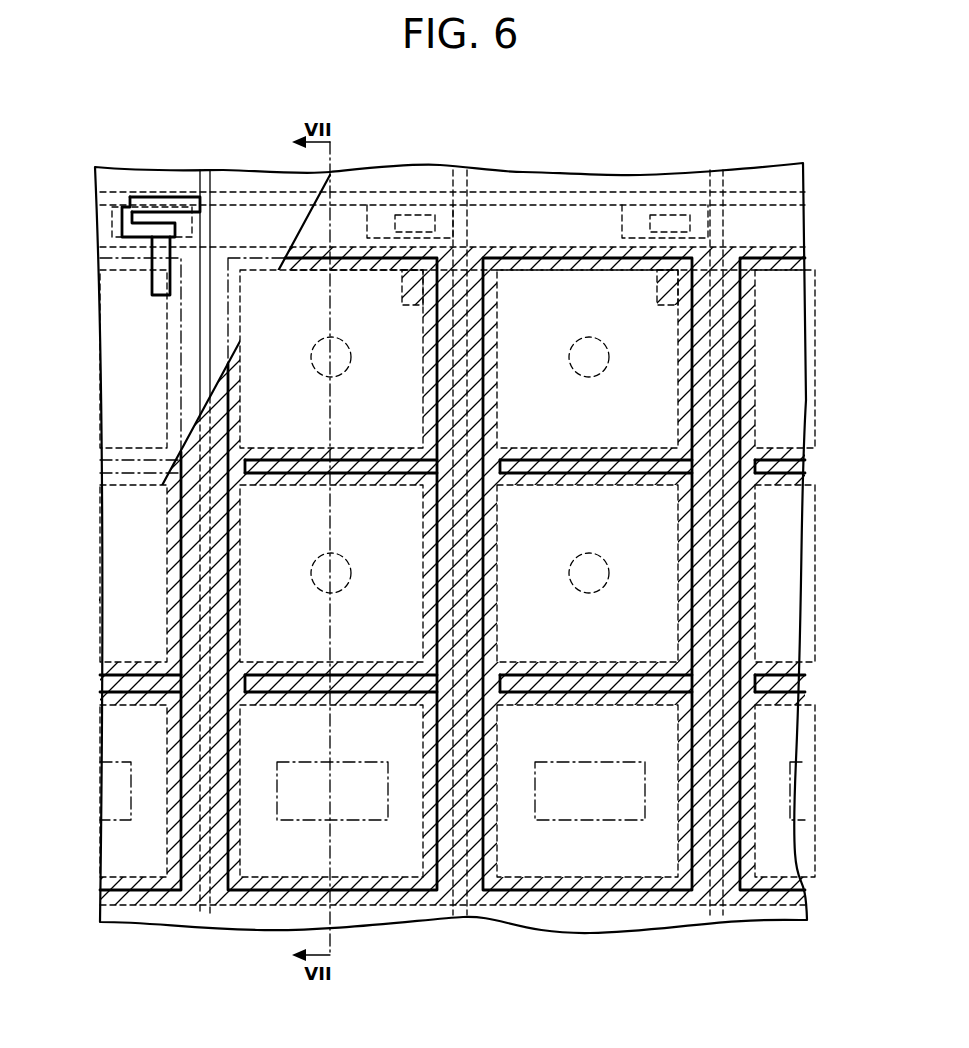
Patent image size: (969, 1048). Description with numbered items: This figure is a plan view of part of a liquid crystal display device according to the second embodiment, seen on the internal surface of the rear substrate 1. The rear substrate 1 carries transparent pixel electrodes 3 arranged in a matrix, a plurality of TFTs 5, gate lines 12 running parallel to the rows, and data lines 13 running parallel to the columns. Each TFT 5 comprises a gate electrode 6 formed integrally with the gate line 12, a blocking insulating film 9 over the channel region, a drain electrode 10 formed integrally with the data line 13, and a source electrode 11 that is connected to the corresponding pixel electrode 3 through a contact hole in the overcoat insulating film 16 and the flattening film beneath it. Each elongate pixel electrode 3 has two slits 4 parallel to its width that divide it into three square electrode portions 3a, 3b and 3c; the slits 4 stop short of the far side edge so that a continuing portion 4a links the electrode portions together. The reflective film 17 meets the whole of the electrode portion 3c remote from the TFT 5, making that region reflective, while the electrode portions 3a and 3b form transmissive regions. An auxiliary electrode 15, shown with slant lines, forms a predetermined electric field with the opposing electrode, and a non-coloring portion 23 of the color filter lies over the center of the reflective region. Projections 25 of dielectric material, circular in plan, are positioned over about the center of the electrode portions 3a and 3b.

The rear substrate 1 is at (685, 170).
The pixel electrode 3 is at (276, 330).
The electrode portion 3a is at (118, 432).
The electrode portion 3b is at (105, 572).
The electrode portion 3c is at (120, 858).
The slit 4 is at (373, 460).
The continuing portion 4a is at (247, 480).
The TFT 5 is at (118, 195).
The gate electrode 6 is at (110, 222).
The blocking insulating film 9 is at (183, 212).
The drain electrode 10 is at (142, 197).
The source electrode 11 is at (152, 245).
The gate line 12 is at (766, 205).
The data line 13 is at (205, 918).
The auxiliary electrode 15 is at (600, 918).
The overcoat insulating film 16 is at (478, 182).
The reflective film 17 is at (148, 922).
The non-coloring portion 23 is at (374, 803).
The projection 25 is at (350, 348).